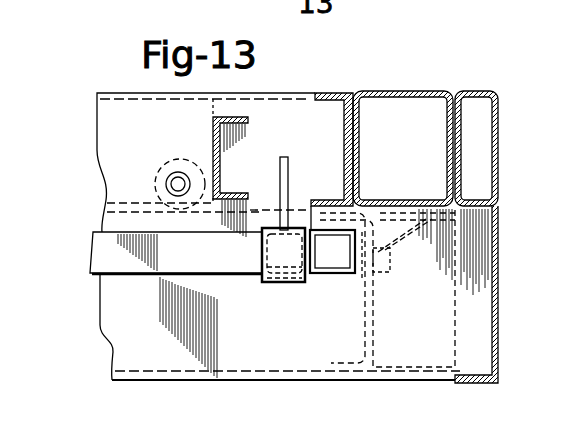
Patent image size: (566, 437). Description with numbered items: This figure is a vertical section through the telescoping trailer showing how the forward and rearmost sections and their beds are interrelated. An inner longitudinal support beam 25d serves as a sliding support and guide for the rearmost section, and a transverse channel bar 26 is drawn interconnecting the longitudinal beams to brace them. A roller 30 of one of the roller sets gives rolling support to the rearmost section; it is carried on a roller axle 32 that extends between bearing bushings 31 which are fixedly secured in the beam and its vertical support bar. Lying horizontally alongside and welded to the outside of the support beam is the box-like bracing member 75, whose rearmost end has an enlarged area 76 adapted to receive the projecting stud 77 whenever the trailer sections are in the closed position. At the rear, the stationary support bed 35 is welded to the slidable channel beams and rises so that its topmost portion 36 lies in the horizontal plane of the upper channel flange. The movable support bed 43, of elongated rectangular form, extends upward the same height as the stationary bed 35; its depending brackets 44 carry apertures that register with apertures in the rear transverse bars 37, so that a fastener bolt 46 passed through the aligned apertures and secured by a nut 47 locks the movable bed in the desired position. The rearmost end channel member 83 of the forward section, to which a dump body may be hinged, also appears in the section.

The panel 25d is at (117, 127).
The transverse channel bar 26 is at (213, 123).
The roller 30 is at (167, 163).
The bearing bushing 31 is at (168, 177).
The roller axle 32 is at (161, 186).
The stationary support bed 35 is at (498, 163).
The topmost portion 36 is at (476, 91).
The rear transverse bar 37 is at (373, 337).
The movable support bed 43 is at (420, 100).
The depending bracket 44 is at (421, 227).
The fastener bolt 46 is at (361, 278).
The nut 47 is at (385, 278).
The box-like bracing member 75 is at (182, 259).
The enlarged area 76 is at (278, 284).
The projecting stud 77 is at (338, 257).
The rearmost end channel member 83 is at (345, 165).